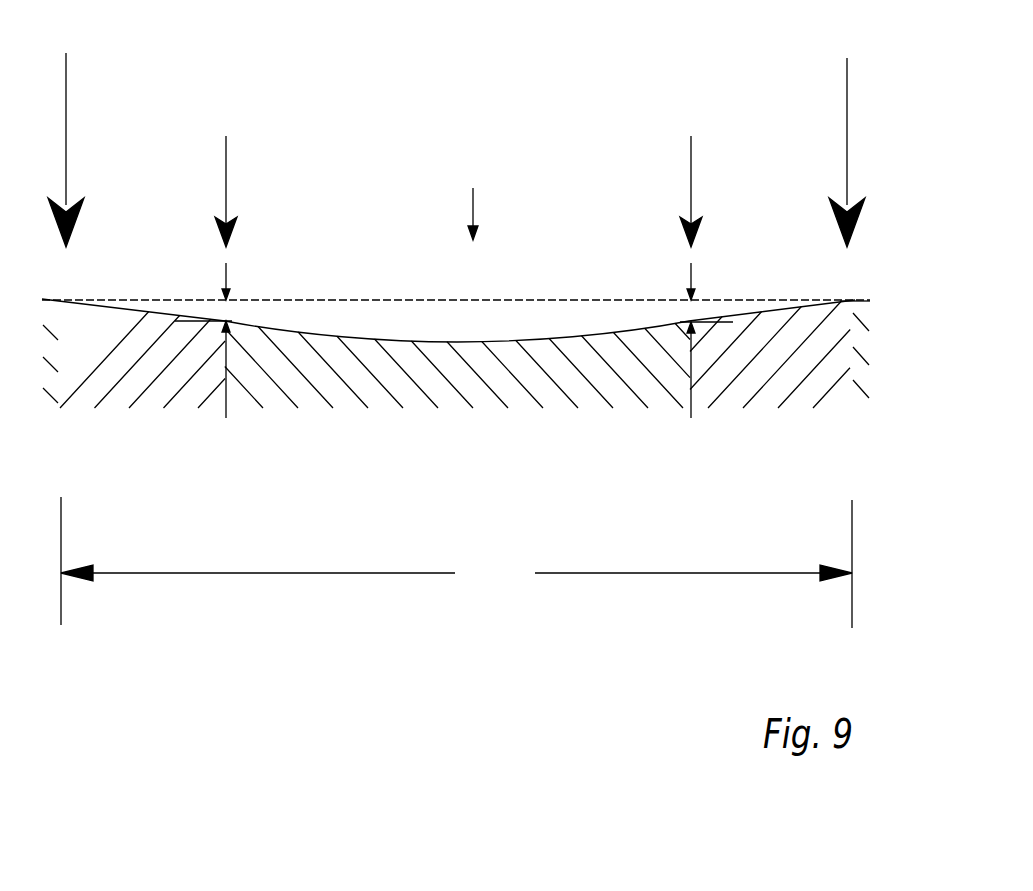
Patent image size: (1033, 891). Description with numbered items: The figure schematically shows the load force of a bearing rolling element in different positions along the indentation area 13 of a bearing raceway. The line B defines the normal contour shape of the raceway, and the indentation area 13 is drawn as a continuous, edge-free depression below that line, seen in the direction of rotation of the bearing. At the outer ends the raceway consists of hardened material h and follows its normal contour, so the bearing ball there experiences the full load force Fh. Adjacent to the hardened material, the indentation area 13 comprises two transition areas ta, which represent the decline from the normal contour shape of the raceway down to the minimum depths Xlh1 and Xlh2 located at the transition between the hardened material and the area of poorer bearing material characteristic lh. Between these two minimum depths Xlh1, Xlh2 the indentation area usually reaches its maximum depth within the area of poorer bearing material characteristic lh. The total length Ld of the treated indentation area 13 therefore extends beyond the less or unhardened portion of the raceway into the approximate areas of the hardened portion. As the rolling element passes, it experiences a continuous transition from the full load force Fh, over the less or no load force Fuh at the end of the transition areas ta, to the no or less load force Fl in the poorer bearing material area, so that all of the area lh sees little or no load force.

The indentation area 13 is at (453, 333).
The line defining normal contour shape of raceway B is at (515, 300).
The hardened material of raceway h is at (43, 387).
The transition area ta is at (95, 387).
The area of poorer bearing material characteristic lh is at (563, 385).
The full load force Fh is at (463, 127).
The less or no load force at end of transition areas Fuh is at (472, 195).
The no or less load force in poorer bearing material area Fl is at (479, 182).
The first minimum depth Xlh1 is at (218, 392).
The second minimum depth Xlh2 is at (706, 394).
The length of treated indentation area Ld is at (456, 562).